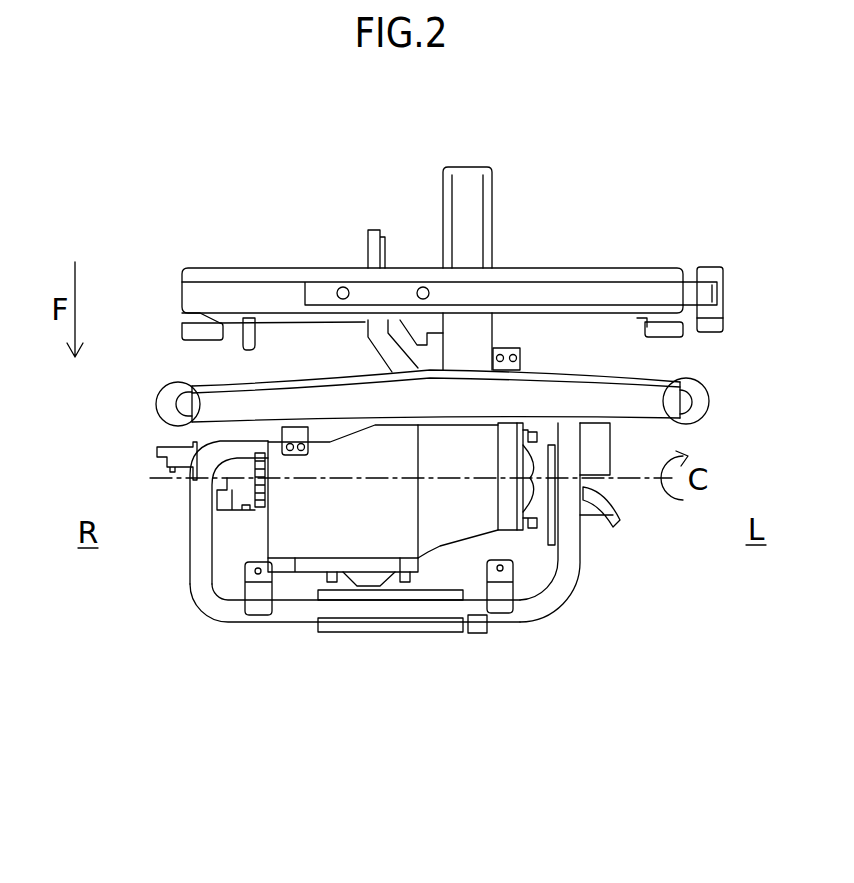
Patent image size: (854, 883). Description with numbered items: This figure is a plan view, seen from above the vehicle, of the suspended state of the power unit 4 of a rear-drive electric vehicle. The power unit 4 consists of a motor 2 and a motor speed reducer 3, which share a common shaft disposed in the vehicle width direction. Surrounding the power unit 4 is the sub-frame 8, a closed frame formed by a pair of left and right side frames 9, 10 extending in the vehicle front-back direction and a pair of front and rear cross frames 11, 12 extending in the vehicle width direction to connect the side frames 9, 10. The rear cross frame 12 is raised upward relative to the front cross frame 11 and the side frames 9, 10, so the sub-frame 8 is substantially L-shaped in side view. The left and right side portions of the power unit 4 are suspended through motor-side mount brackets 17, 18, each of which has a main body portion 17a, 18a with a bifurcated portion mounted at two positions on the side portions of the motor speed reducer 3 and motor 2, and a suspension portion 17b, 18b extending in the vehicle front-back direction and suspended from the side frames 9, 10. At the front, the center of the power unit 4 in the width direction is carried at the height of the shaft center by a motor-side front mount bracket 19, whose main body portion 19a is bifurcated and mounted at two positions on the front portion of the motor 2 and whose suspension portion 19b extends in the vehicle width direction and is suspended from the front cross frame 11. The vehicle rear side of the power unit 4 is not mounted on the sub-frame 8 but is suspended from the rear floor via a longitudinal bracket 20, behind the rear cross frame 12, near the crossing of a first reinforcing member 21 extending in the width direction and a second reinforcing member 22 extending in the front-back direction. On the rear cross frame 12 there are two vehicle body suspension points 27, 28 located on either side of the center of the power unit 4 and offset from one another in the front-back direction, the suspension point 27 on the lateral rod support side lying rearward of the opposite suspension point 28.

The motor 2 is at (265, 552).
The motor speed reducer 3 is at (477, 507).
The power unit 4 is at (306, 596).
The sub-frame 8 is at (260, 636).
The side frame 9 is at (568, 560).
The side frame 10 is at (186, 546).
The front cross frame 11 is at (540, 608).
The rear cross frame 12 is at (528, 365).
The motor-side mount bracket 17 is at (583, 537).
The main body portion 17a is at (533, 465).
The suspension portion 17b is at (612, 510).
The motor-side mount bracket 18 is at (247, 455).
The main body portion 18a is at (218, 483).
The suspension portion 18b is at (218, 512).
The motor-side front mount bracket 19 is at (358, 650).
The main body portion 19a is at (383, 574).
The suspension portion 19b is at (416, 626).
The longitudinal bracket 20 is at (381, 346).
The first reinforcing member 21 is at (636, 276).
The second reinforcing member 22 is at (492, 185).
The vehicle body suspension point 27 is at (505, 348).
The vehicle body suspension point 28 is at (291, 430).